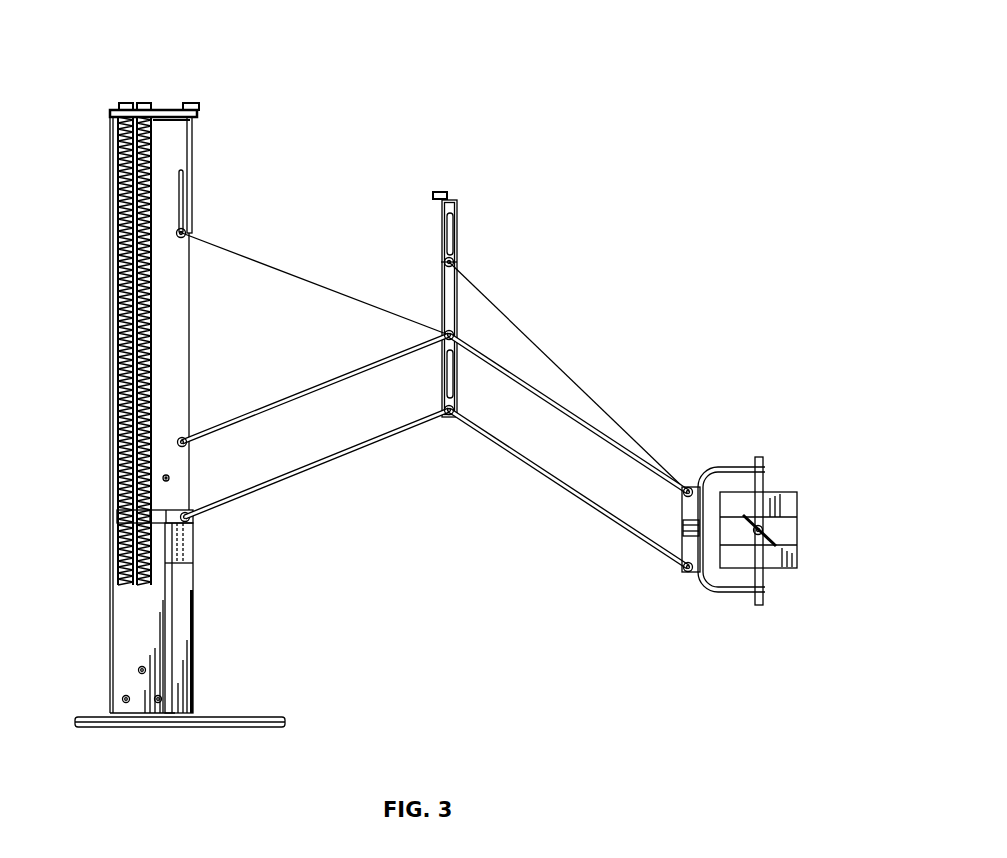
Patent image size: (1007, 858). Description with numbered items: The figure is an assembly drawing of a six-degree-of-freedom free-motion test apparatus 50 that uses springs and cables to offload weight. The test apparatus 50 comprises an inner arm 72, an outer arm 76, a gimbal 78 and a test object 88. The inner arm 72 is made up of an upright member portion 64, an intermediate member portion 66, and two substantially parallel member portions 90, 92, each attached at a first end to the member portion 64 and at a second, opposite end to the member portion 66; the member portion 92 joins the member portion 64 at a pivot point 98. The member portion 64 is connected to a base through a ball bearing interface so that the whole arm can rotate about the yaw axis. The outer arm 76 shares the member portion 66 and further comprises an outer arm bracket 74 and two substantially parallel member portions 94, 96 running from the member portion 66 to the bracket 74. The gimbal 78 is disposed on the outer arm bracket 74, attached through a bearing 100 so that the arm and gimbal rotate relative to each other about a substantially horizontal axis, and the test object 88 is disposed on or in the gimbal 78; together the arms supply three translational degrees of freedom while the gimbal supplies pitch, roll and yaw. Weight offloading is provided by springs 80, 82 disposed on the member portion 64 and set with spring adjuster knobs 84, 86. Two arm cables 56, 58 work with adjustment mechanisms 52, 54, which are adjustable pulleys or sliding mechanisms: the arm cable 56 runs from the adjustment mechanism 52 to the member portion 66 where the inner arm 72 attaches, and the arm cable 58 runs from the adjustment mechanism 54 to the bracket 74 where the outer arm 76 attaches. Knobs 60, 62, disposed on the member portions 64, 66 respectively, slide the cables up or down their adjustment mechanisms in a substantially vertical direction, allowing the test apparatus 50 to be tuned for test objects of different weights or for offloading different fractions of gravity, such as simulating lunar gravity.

The test apparatus 50 is at (668, 34).
The adjustment mechanism 52 is at (187, 233).
The adjustment mechanism 54 is at (452, 260).
The arm cable 56 is at (240, 253).
The arm cable 58 is at (508, 315).
The knob 60 is at (192, 102).
The knob 62 is at (440, 192).
The member portion 64 is at (112, 290).
The member portion 66 is at (448, 290).
The inner arm 72 is at (315, 440).
The outer arm bracket 74 is at (680, 512).
The outer arm 76 is at (568, 451).
The gimbal 78 is at (735, 467).
The spring 80 is at (120, 245).
The spring 82 is at (120, 207).
The spring adjuster knob 84 is at (128, 102).
The spring adjuster knob 86 is at (145, 102).
The test object 88 is at (797, 532).
The member portion 90 is at (297, 395).
The member portion 92 is at (330, 457).
The member portion 94 is at (578, 424).
The member portion 96 is at (533, 470).
The pivot point 98 is at (192, 518).
The bearing 100 is at (682, 532).